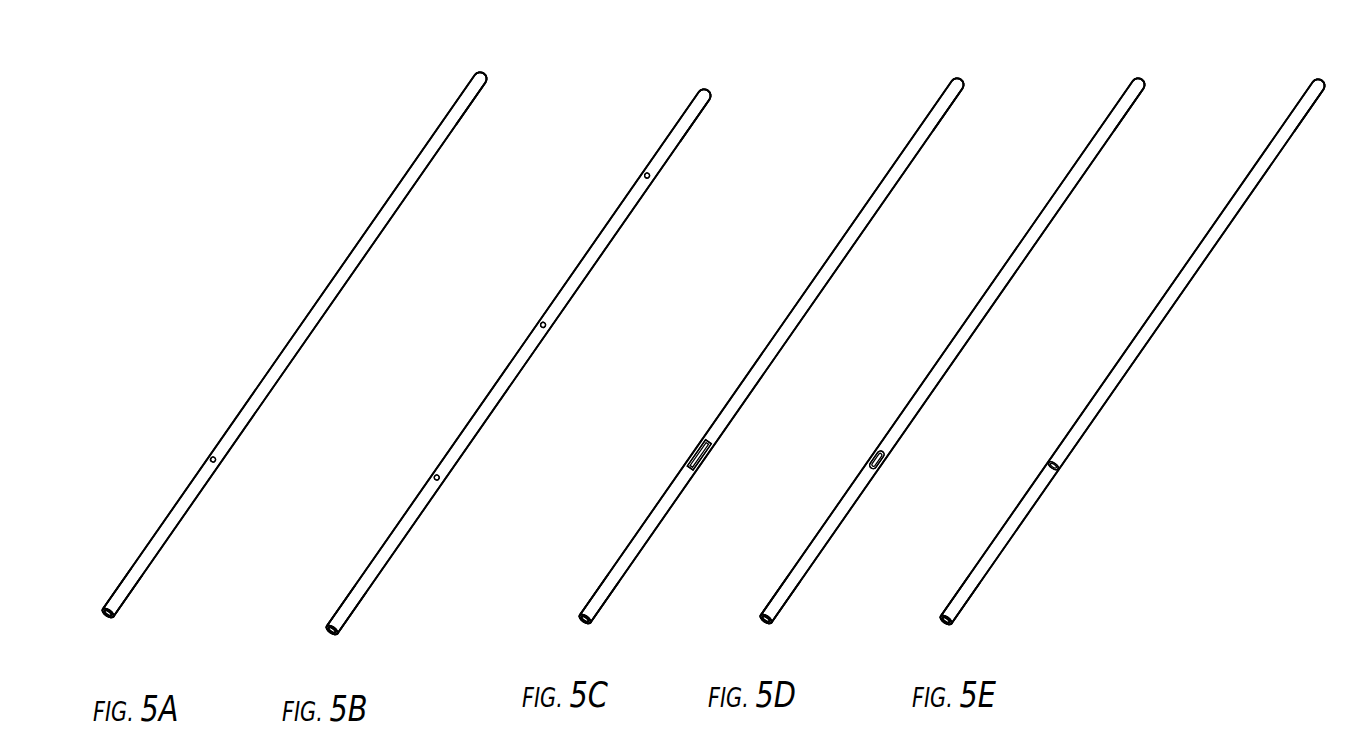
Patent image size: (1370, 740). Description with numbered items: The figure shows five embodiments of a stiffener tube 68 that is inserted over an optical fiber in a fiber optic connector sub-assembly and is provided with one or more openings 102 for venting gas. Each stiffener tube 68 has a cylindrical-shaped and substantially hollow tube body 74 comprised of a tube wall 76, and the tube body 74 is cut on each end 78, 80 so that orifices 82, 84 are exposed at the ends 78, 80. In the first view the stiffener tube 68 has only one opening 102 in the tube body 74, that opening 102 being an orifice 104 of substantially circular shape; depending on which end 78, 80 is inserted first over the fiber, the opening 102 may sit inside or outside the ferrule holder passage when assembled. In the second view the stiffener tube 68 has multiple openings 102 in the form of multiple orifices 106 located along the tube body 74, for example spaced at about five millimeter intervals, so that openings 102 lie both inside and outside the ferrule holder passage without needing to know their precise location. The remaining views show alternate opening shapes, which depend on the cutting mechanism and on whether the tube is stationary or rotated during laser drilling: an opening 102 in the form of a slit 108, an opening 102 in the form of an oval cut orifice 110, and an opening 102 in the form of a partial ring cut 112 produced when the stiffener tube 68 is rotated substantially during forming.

In FIG. 5A, the stiffener tube 68 is at (295, 344).
In FIG. 5B, the stiffener tube 68 is at (519, 361).
In FIG. 5C, the stiffener tube 68 is at (772, 350).
In FIG. 5D, the stiffener tube 68 is at (953, 350).
In FIG. 5E, the stiffener tube 68 is at (1133, 351).
In FIG. 5A, the tube body 74 is at (289, 342).
In FIG. 5B, the tube body 74 is at (513, 359).
In FIG. 5C, the tube body 74 is at (766, 348).
In FIG. 5D, the tube body 74 is at (947, 348).
In FIG. 5E, the tube body 74 is at (1127, 349).
In FIG. 5A, the tube wall 76 is at (299, 350).
In FIG. 5B, the tube wall 76 is at (523, 367).
In FIG. 5C, the tube wall 76 is at (776, 356).
In FIG. 5D, the tube wall 76 is at (957, 356).
In FIG. 5E, the tube wall 76 is at (1137, 357).
In FIG. 5A, the end 78 is at (149, 609).
In FIG. 5B, the end 78 is at (371, 627).
In FIG. 5C, the end 78 is at (626, 616).
In FIG. 5D, the end 78 is at (807, 616).
In FIG. 5E, the end 78 is at (987, 616).
In FIG. 5A, the end 80 is at (482, 110).
In FIG. 5B, the end 80 is at (704, 127).
In FIG. 5C, the end 80 is at (957, 118).
In FIG. 5D, the end 80 is at (1138, 118).
In FIG. 5E, the end 80 is at (1318, 119).
In FIG. 5A, the orifice 82 is at (81, 629).
In FIG. 5B, the orifice 82 is at (303, 646).
In FIG. 5C, the orifice 82 is at (558, 635).
In FIG. 5D, the orifice 82 is at (740, 635).
In FIG. 5E, the orifice 82 is at (920, 636).
In FIG. 5A, the orifice 84 is at (487, 48).
In FIG. 5B, the orifice 84 is at (711, 65).
In FIG. 5C, the orifice 84 is at (964, 59).
In FIG. 5D, the orifice 84 is at (1144, 59).
In FIG. 5E, the orifice 84 is at (1324, 60).
In FIG. 5A, the opening 102 is at (198, 420).
In FIG. 5B, the opening 102 is at (526, 293).
In FIG. 5C, the opening 102 is at (688, 430).
In FIG. 5D, the opening 102 is at (865, 430).
In FIG. 5E, the opening 102 is at (1039, 435).
In FIG. 5A, the orifice 104 is at (241, 484).
In FIG. 5B, the orifices 106 is at (560, 364).
In FIG. 5C, the slit 108 is at (714, 486).
In FIG. 5D, the oval cut orifice 110 is at (892, 493).
In FIG. 5E, the partial ring cut 112 is at (1067, 495).